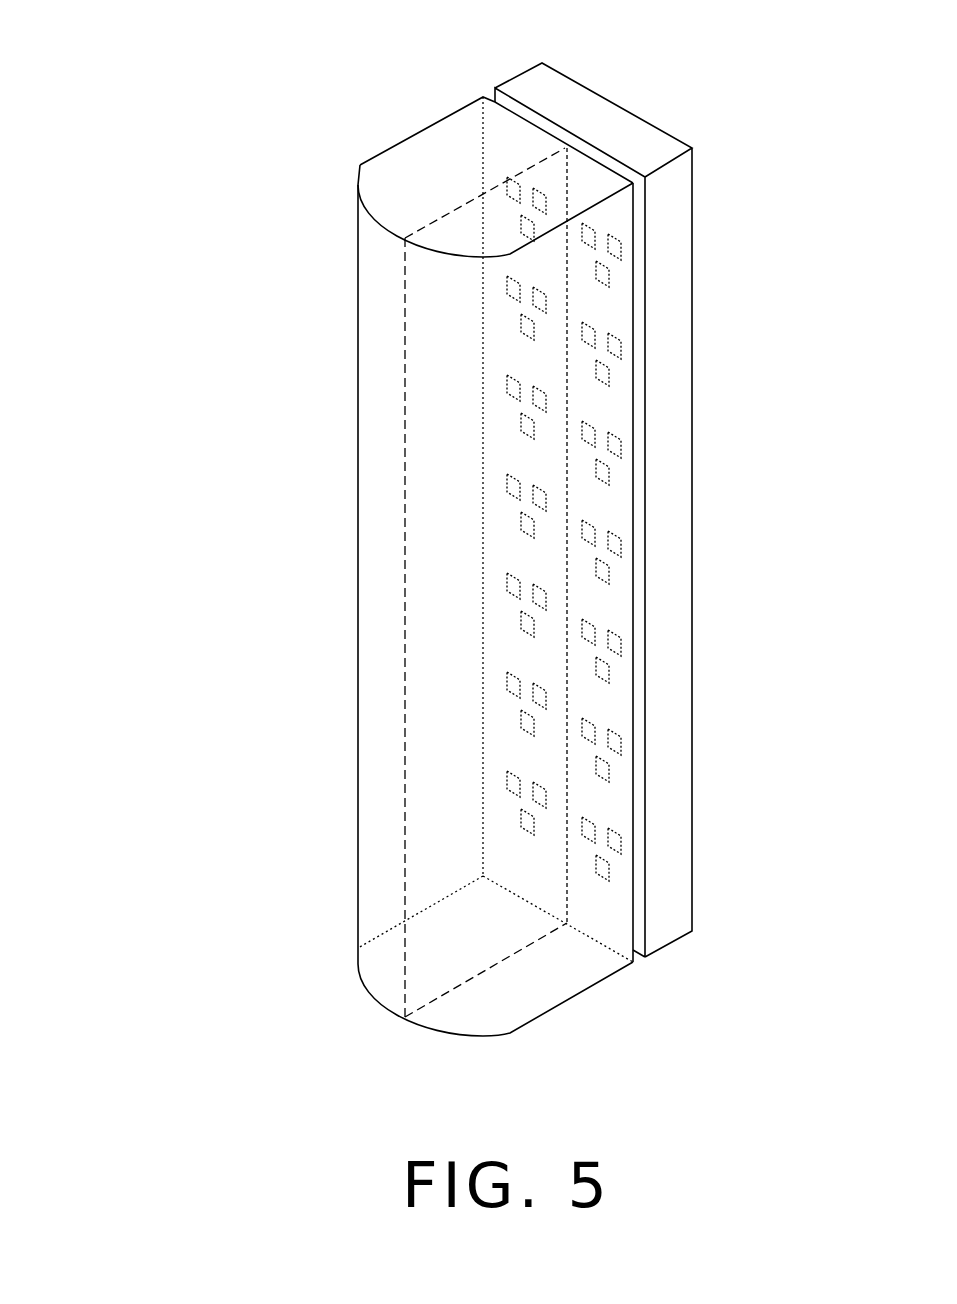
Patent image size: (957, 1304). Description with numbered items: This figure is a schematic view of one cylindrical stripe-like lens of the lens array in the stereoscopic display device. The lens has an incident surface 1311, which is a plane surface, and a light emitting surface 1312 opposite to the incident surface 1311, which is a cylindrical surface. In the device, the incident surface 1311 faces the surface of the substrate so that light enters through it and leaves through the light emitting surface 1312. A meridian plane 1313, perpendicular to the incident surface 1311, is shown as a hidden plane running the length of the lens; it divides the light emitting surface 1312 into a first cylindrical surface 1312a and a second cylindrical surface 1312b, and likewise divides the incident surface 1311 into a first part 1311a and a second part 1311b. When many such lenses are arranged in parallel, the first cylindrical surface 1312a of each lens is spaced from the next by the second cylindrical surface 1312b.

The incident surface 1311 is at (800, 92).
The first part 1311a is at (513, 115).
The second part 1311b is at (605, 165).
The light emitting surface 1312 is at (171, 267).
The first cylindrical surface 1312a is at (380, 304).
The second cylindrical surface 1312b is at (437, 395).
The meridian plane 1313 is at (463, 205).